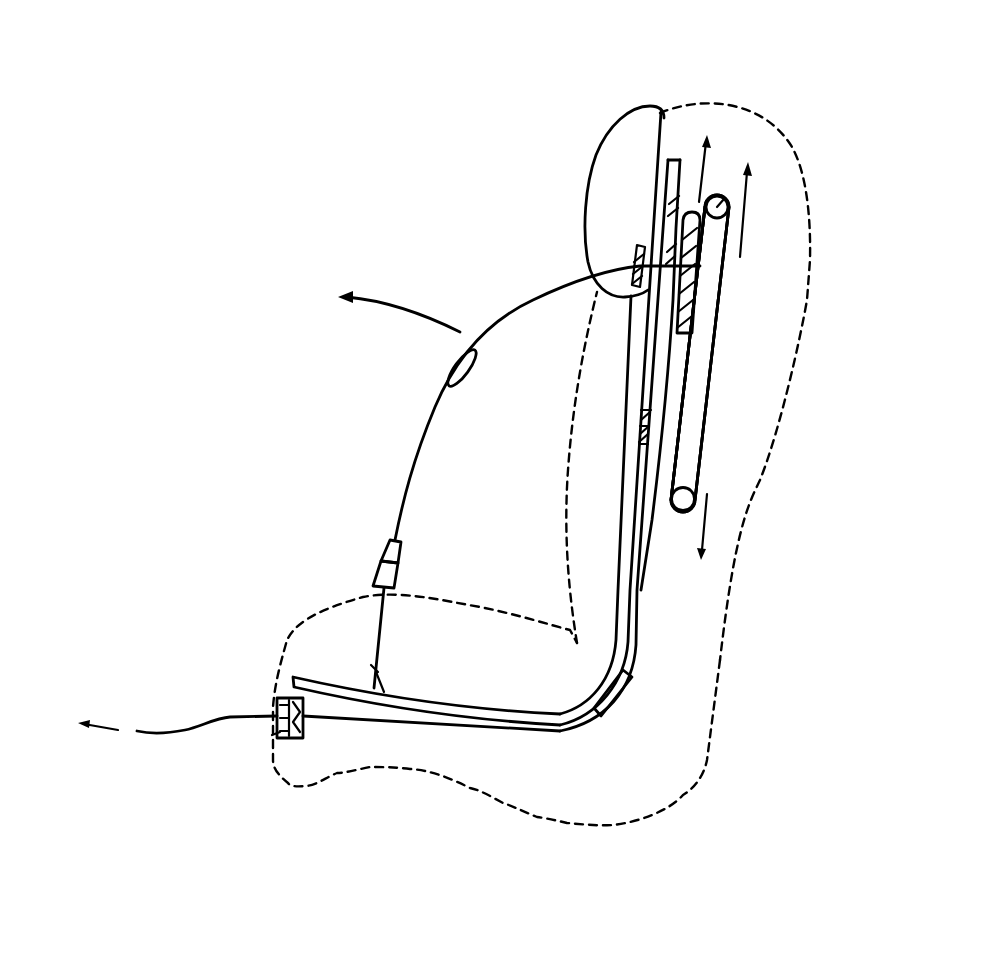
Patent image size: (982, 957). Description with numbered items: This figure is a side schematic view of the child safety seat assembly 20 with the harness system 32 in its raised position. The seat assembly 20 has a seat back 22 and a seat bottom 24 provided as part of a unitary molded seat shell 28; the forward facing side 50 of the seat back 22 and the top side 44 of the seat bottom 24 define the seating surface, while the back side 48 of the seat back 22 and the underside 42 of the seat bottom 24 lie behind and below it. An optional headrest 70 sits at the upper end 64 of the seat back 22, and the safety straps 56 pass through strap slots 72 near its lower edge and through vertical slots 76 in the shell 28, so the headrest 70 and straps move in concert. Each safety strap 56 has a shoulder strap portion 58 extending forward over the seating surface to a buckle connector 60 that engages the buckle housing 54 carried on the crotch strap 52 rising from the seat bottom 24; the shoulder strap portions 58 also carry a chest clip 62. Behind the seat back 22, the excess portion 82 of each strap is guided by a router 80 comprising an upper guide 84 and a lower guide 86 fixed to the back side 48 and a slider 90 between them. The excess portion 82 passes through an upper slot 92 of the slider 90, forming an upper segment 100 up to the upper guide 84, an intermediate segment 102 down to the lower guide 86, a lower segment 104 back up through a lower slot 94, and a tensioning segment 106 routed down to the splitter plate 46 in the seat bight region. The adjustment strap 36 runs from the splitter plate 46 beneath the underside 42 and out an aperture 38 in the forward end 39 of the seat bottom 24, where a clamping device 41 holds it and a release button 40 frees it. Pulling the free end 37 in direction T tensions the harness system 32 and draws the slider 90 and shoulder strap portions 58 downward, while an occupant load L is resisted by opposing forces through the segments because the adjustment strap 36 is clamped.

The seat assembly 20 is at (477, 76).
The seat back 22 is at (777, 215).
The seat bottom 24 is at (613, 797).
The seat shell 28 is at (627, 548).
The safety harness system 32 is at (406, 440).
The adjustment strap 36 is at (227, 727).
The free end 37 is at (137, 730).
The aperture 38 is at (280, 697).
The forward end 39 is at (285, 648).
The release button 40 is at (272, 735).
The strap clamping device 41 is at (293, 740).
The underside 42 is at (450, 722).
The top side 44 is at (437, 698).
The splitter plate 46 is at (617, 690).
The back side 48 is at (672, 349).
The forward facing side 50 is at (641, 412).
The crotch strap 52 is at (373, 640).
The buckle housing 54 is at (374, 567).
The safety straps 56 is at (647, 605).
The shoulder strap portions 58 is at (488, 326).
The buckle connectors 60 is at (383, 540).
The chest clip 62 is at (456, 360).
The upper end 64 is at (693, 100).
The headrest 70 is at (603, 163).
The strap slots 72 is at (634, 253).
The vertical slots 76 is at (645, 358).
The router 80 is at (724, 421).
The excess portion 82 is at (724, 398).
The upper guide 84 is at (729, 207).
The lower guide 86 is at (681, 517).
The slider 90 is at (690, 300).
The upper slots 92 is at (697, 283).
The lower slots 94 is at (695, 340).
The upper segment 100 is at (697, 263).
The intermediate segment 102 is at (708, 428).
The lower segment 104 is at (678, 428).
The tensioning segment 106 is at (652, 603).